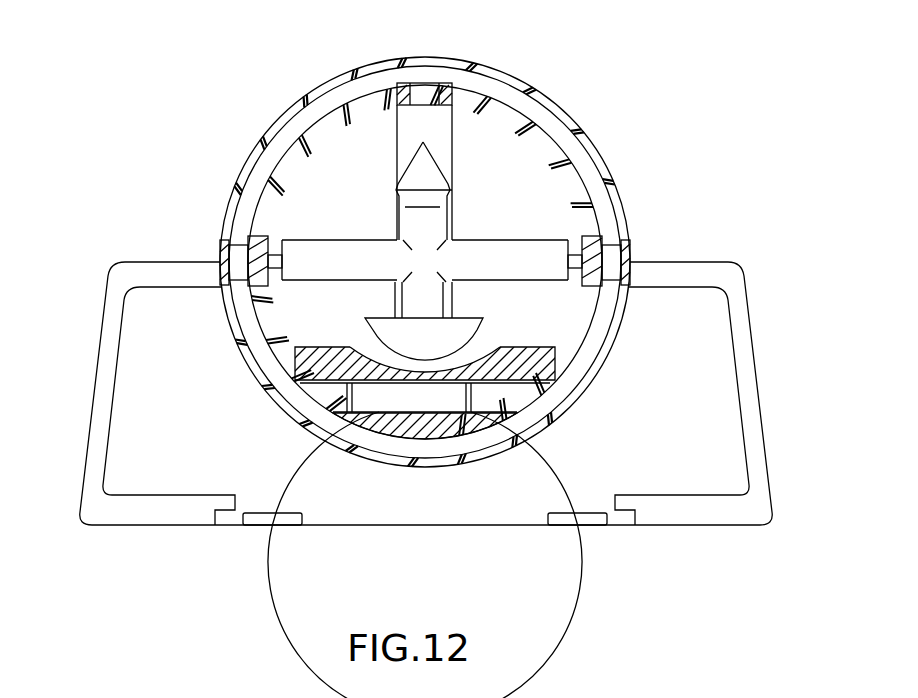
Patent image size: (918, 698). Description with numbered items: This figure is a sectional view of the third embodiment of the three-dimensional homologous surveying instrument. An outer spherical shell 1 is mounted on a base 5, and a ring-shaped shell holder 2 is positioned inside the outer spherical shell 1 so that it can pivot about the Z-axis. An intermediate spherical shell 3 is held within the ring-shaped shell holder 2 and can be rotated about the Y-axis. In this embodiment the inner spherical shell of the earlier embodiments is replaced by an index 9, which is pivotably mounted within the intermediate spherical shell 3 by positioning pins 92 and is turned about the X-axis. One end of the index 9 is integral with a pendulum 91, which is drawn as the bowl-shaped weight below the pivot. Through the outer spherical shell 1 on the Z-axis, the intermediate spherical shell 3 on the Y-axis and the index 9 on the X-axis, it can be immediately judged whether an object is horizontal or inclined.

The outer spherical shell 1 is at (596, 148).
The ring-shaped shell holder 2 is at (617, 232).
The intermediate spherical shell 3 is at (547, 132).
The base 5 is at (707, 262).
The index 9 is at (395, 170).
The pendulum 91 is at (447, 342).
The positioning pins 92 is at (273, 253).